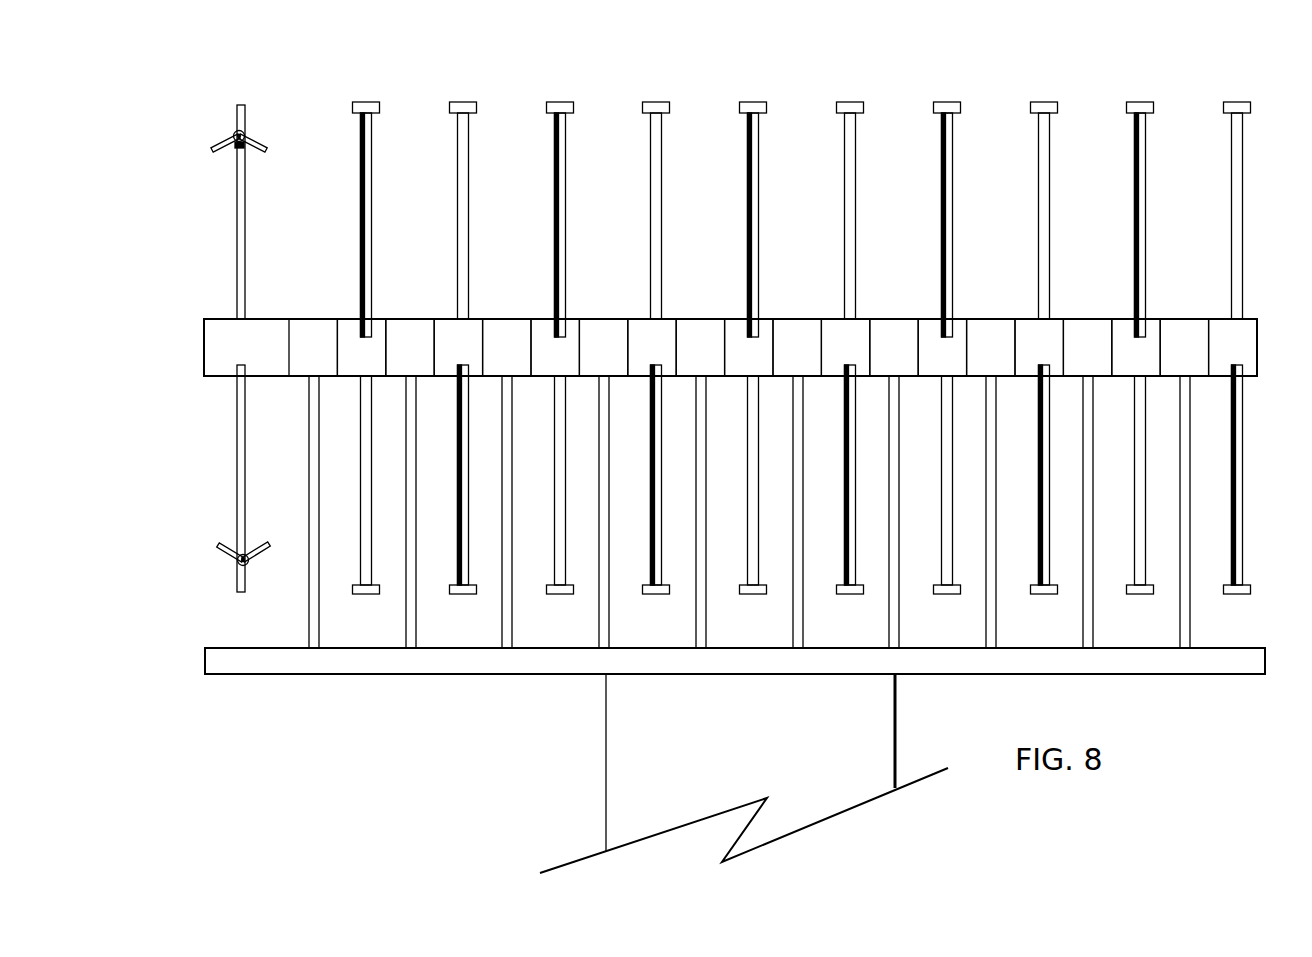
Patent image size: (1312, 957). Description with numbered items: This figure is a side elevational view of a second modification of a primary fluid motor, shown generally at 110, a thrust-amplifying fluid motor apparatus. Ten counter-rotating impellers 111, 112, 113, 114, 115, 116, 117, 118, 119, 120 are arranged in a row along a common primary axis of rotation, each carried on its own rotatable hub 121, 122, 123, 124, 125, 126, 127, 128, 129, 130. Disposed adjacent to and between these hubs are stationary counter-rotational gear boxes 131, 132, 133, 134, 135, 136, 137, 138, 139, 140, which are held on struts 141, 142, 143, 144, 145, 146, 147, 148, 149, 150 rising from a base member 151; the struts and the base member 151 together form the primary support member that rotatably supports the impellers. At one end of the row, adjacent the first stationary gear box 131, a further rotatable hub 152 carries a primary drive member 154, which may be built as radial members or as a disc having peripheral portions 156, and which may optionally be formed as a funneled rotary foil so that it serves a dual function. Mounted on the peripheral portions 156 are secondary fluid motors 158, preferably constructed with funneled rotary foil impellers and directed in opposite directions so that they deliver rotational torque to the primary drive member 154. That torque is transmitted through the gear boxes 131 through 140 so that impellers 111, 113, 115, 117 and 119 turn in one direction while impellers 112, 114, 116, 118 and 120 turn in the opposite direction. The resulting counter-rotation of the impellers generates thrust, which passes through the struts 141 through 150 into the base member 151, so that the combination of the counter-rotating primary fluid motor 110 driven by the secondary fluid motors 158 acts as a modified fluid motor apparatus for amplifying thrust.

The primary fluid motor 110 is at (819, 80).
The counter-rotating impeller 111 is at (372, 165).
The counter-rotating impeller 112 is at (469, 165).
The counter-rotating impeller 113 is at (566, 165).
The counter-rotating impeller 114 is at (662, 165).
The counter-rotating impeller 115 is at (759, 165).
The counter-rotating impeller 116 is at (856, 165).
The counter-rotating impeller 117 is at (953, 165).
The counter-rotating impeller 118 is at (1050, 165).
The counter-rotating impeller 119 is at (1146, 165).
The counter-rotating impeller 120 is at (1243, 165).
The rotatable hub 121 is at (353, 317).
The rotatable hub 122 is at (450, 317).
The rotatable hub 123 is at (547, 317).
The rotatable hub 124 is at (644, 317).
The rotatable hub 125 is at (741, 317).
The rotatable hub 126 is at (837, 317).
The rotatable hub 127 is at (934, 317).
The rotatable hub 128 is at (1031, 317).
The rotatable hub 129 is at (1128, 317).
The rotatable hub 130 is at (1225, 317).
The stationary counter-rotational gear box 131 is at (300, 380).
The stationary counter-rotational gear box 132 is at (415, 365).
The stationary counter-rotational gear box 133 is at (512, 365).
The stationary counter-rotational gear box 134 is at (609, 365).
The stationary counter-rotational gear box 135 is at (706, 365).
The stationary counter-rotational gear box 136 is at (803, 365).
The stationary counter-rotational gear box 137 is at (899, 365).
The stationary counter-rotational gear box 138 is at (996, 365).
The stationary counter-rotational gear box 139 is at (1093, 365).
The stationary counter-rotational gear box 140 is at (1190, 365).
The strut 141 is at (321, 620).
The strut 142 is at (418, 620).
The strut 143 is at (514, 620).
The strut 144 is at (611, 620).
The strut 145 is at (708, 620).
The strut 146 is at (805, 620).
The strut 147 is at (901, 620).
The strut 148 is at (998, 620).
The strut 149 is at (1095, 620).
The strut 150 is at (1192, 620).
The base member 151 is at (480, 677).
The rotatable hub 152 is at (216, 320).
The primary drive member 154 is at (247, 244).
The peripheral portions 156 is at (244, 148).
The secondary fluid motors 158 is at (248, 132).